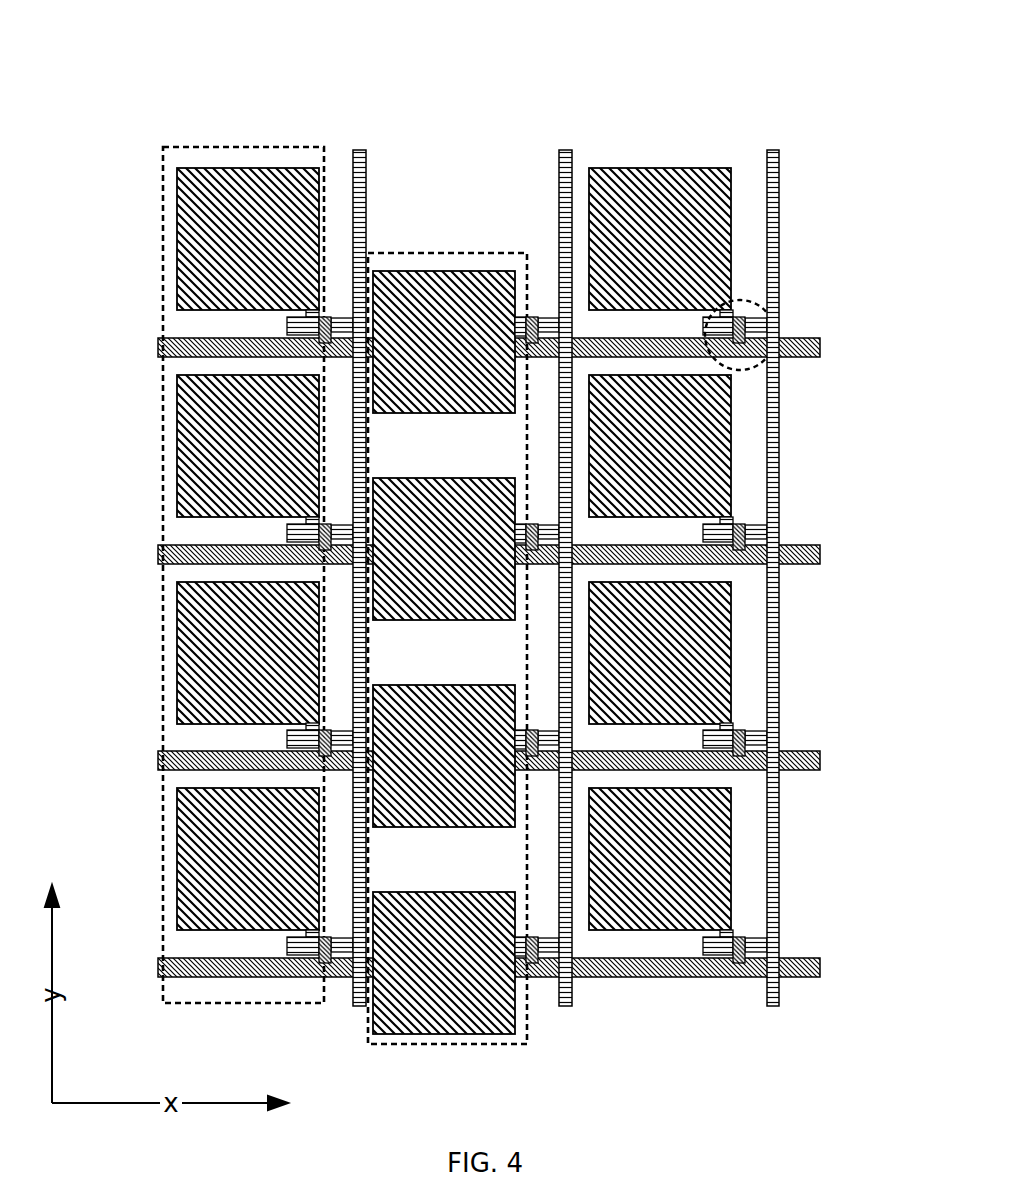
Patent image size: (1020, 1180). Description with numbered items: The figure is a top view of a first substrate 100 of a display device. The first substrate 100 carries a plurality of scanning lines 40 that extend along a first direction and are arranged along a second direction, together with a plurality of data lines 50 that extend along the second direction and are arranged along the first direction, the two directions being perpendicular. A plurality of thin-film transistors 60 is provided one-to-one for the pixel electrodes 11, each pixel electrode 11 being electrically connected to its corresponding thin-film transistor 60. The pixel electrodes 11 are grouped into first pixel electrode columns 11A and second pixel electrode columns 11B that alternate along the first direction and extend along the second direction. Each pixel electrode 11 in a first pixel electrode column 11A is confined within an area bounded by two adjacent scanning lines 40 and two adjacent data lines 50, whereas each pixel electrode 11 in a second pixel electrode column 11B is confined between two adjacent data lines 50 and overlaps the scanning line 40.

The first substrate 100 is at (790, 43).
The pixel electrode 11 is at (642, 175).
The first pixel electrode column 11A is at (193, 145).
The second pixel electrode column 11B is at (407, 252).
The scanning line 40 is at (815, 960).
The data line 50 is at (773, 223).
The thin-film transistor 60 is at (752, 300).